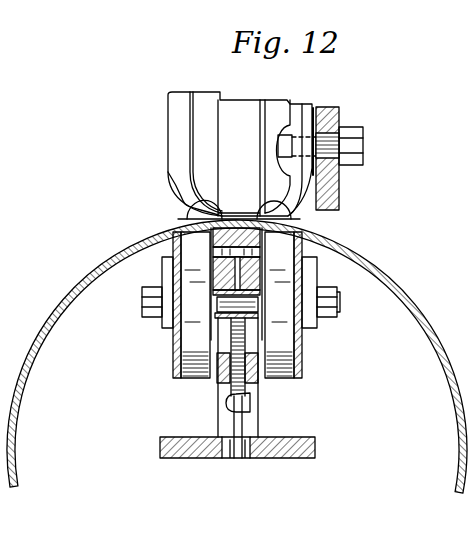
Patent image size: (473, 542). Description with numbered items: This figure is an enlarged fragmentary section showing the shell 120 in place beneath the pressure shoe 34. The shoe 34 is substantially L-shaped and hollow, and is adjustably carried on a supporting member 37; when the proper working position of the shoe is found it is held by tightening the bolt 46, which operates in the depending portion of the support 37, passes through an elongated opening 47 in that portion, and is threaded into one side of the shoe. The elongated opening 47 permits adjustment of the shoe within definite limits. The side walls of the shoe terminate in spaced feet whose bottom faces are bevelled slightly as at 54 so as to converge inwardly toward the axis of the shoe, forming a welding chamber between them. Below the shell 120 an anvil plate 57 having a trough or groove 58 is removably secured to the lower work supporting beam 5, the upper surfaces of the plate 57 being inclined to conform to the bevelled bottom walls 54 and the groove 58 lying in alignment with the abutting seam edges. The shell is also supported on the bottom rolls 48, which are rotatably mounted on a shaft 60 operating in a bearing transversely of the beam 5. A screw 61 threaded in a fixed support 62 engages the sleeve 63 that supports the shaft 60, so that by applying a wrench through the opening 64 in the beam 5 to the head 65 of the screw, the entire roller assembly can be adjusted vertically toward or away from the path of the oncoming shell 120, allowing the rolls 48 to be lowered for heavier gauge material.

The lower work supporting beam 5 is at (283, 441).
The pressure shoe 34 is at (176, 134).
The supporting member 37 is at (342, 188).
The bolt 46 is at (370, 141).
The elongated opening 47 is at (340, 162).
The bottom rolls 48 is at (178, 368).
The bevelled bottom faces 54 is at (186, 218).
The anvil plate 57 is at (178, 243).
The trough or groove 58 is at (305, 245).
The shaft 60 is at (155, 304).
The screw 61 is at (235, 401).
The fixed support 62 is at (223, 378).
The sleeve 63 is at (256, 296).
The opening 64 is at (258, 417).
The head 65 is at (255, 397).
The shell 120 is at (23, 394).